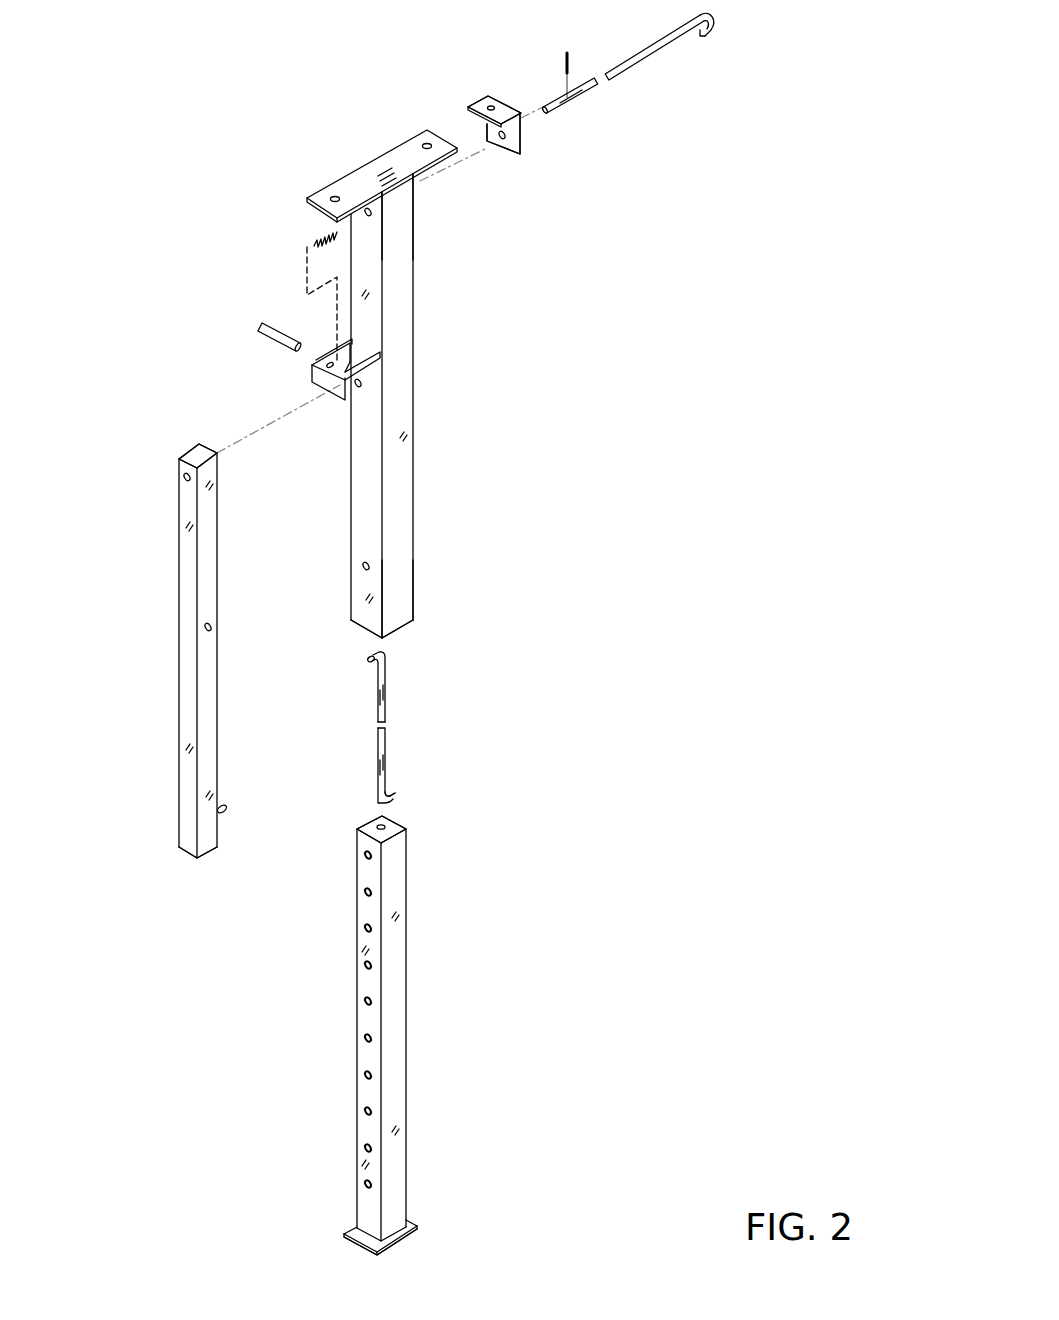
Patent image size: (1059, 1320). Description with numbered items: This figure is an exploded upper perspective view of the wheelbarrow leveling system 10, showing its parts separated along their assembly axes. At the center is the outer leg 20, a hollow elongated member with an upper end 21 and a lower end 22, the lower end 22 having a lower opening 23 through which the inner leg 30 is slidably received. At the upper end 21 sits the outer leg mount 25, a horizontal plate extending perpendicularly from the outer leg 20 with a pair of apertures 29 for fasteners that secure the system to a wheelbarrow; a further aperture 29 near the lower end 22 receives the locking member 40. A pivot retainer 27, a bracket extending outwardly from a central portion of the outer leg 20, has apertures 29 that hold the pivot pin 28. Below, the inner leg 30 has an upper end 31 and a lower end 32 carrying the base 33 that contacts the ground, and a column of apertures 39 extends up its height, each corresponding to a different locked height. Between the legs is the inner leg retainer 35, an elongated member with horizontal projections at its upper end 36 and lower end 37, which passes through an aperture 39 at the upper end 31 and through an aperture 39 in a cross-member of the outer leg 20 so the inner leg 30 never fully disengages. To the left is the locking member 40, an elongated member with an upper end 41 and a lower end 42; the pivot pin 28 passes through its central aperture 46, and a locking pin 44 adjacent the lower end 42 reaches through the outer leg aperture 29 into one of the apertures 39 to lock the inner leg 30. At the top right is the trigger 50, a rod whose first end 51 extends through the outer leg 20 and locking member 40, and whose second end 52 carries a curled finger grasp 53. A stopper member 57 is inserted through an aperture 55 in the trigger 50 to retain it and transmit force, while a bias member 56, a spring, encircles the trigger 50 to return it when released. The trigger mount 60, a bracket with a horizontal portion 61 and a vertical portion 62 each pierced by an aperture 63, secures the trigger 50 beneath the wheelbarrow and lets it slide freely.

The wheelbarrow leveling system 10 is at (110, 104).
The outer leg 20 is at (414, 407).
The upper end 21 is at (397, 193).
The lower end 22 is at (400, 615).
The lower opening 23 is at (397, 635).
The outer leg mount 25 is at (307, 199).
The pivot retainer 27 is at (312, 372).
The pivot pin 28 is at (258, 327).
The apertures 29 is at (426, 144).
The inner leg 30 is at (408, 1027).
The upper end 31 is at (396, 834).
The lower end 32 is at (410, 1215).
The base 33 is at (360, 1247).
The inner leg retainer 35 is at (390, 690).
The upper end 36 is at (370, 662).
The lower end 37 is at (398, 794).
The apertures 39 is at (377, 826).
The locking member 40 is at (178, 577).
The upper end 41 is at (187, 455).
The lower end 42 is at (183, 853).
The locking pin 44 is at (226, 806).
The aperture 46 is at (185, 478).
The trigger 50 is at (627, 76).
The first end 51 is at (544, 107).
The second end 52 is at (710, 22).
The finger grasp 53 is at (708, 35).
The aperture 55 is at (572, 99).
The bias member 56 is at (316, 241).
The stopper member 57 is at (572, 62).
The trigger mount 60 is at (492, 100).
The horizontal portion 61 is at (482, 112).
The vertical portion 62 is at (522, 152).
The apertures 63 is at (468, 107).